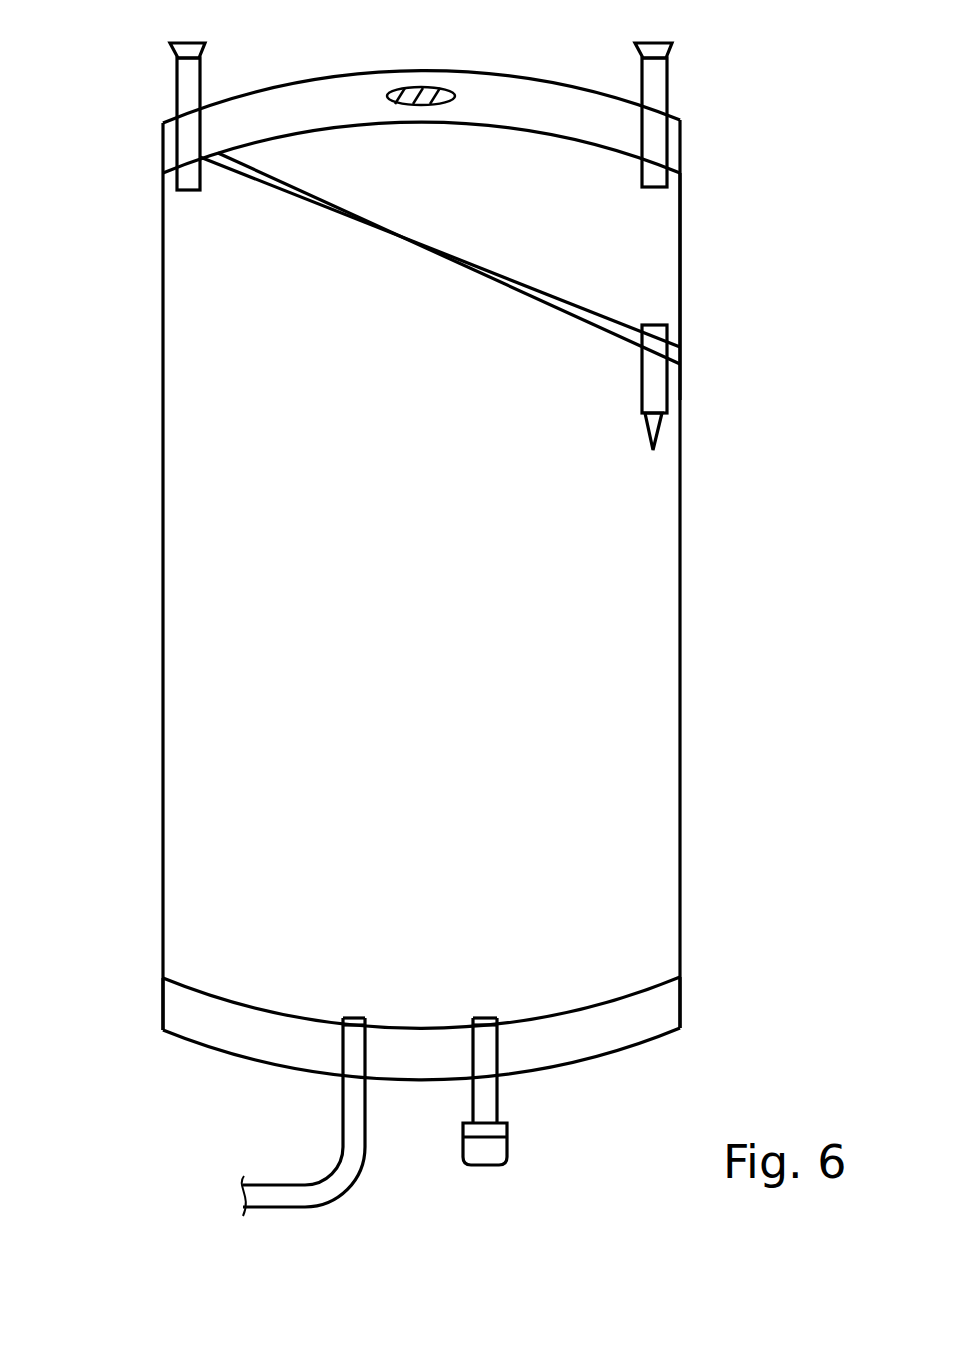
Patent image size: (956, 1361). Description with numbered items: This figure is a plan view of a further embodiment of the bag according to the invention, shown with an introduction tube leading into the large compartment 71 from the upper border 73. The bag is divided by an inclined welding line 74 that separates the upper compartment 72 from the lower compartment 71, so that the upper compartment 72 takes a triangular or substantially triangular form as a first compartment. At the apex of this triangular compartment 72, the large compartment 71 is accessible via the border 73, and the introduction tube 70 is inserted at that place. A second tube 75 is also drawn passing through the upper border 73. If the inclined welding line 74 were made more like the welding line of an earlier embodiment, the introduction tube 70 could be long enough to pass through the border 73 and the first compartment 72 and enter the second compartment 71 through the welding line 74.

The introduction tube 70 is at (175, 83).
The large compartment 71 is at (662, 657).
The upper compartment 72 is at (667, 237).
The upper border 73 is at (682, 143).
The inclined welding line 74 is at (597, 308).
The pin 75 is at (667, 80).